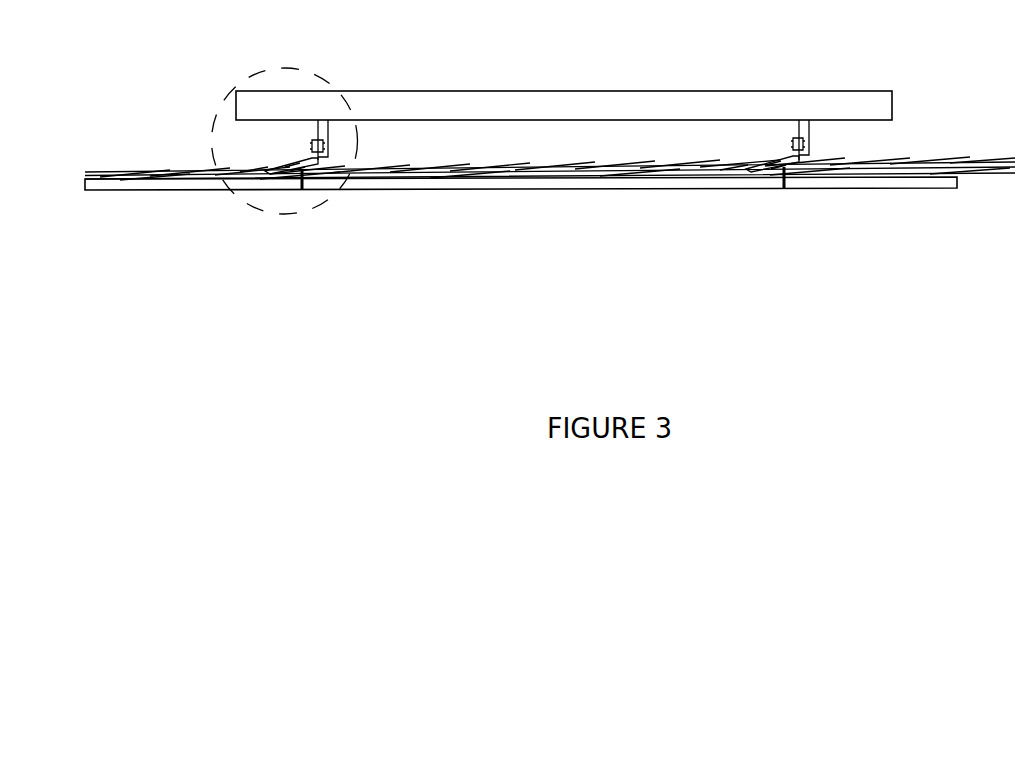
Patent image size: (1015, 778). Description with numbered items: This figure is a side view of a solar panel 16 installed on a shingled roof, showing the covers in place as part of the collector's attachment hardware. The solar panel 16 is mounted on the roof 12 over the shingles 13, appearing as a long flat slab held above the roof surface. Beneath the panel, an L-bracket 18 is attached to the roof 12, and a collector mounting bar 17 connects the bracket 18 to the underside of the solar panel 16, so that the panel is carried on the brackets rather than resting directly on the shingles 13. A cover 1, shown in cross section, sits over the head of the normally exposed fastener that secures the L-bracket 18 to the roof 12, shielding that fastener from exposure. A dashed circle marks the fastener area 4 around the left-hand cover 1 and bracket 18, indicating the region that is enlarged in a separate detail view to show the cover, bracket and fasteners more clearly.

The cover 1 is at (287, 155).
The detail region 4 is at (263, 216).
The roof 12 is at (870, 180).
The shingles 13 is at (905, 162).
The solar panel 16 is at (600, 84).
The collector mounting bar 17 is at (812, 131).
The L-bracket 18 is at (805, 160).